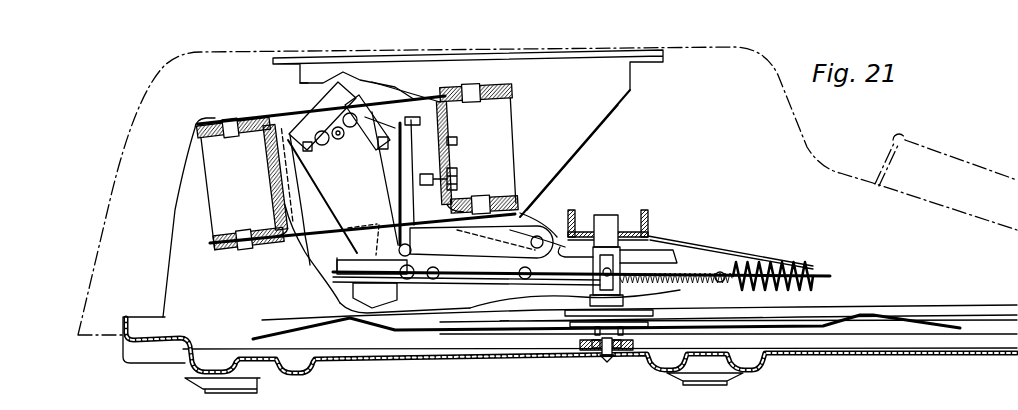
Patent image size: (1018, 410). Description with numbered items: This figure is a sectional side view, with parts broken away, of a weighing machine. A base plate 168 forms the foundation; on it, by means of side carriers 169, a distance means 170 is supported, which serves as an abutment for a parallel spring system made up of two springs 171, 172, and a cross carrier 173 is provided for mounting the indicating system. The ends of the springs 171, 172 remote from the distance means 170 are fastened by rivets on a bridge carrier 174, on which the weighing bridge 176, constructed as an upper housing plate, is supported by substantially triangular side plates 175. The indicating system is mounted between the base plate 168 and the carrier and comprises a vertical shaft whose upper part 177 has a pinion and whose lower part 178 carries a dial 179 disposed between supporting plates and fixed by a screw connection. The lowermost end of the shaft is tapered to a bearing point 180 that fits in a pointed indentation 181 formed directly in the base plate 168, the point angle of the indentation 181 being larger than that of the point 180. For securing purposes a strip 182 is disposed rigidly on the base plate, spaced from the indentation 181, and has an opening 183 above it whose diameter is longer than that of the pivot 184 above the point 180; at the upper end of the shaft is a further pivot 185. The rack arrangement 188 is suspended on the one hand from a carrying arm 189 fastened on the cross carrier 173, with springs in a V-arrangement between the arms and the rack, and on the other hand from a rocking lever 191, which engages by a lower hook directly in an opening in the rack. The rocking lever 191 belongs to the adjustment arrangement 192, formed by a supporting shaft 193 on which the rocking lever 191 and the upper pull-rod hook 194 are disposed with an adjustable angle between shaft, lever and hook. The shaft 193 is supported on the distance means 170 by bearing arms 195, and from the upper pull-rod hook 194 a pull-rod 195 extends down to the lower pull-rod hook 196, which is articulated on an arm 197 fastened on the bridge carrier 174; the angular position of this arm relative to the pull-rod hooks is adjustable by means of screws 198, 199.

The base plate 168 is at (327, 360).
The side carriers 169 is at (197, 325).
The distance means 170 is at (267, 187).
The parallel spring 171 is at (280, 117).
The parallel spring 172 is at (322, 270).
The cross carrier 173 is at (645, 210).
The bridge carrier 174 is at (457, 170).
The side plates 175 is at (618, 96).
The weighing bridge 176 is at (652, 62).
The upper part of vertical shaft 177 is at (648, 230).
The lower part of vertical shaft 178 is at (647, 237).
The dial 179 is at (833, 313).
The bearing point 180 is at (605, 357).
The pointed indentation 181 is at (617, 350).
The strip 182 is at (693, 357).
The opening 183 is at (640, 352).
The pivot 184 is at (583, 348).
The pivot 185 is at (605, 228).
The rack arrangement 188 is at (595, 252).
The carrying arm 189 is at (735, 245).
The rocking lever 191 is at (337, 285).
The adjustment arrangement 192 is at (352, 92).
The supporting shaft 193 is at (400, 100).
The upper pull-rod hook 194 is at (447, 120).
The bearing arms / pull-rod 195 is at (398, 228).
The lower pull-rod hook 196 is at (420, 282).
The arm 197 is at (527, 208).
The screw 198 is at (457, 142).
The screw 199 is at (458, 178).